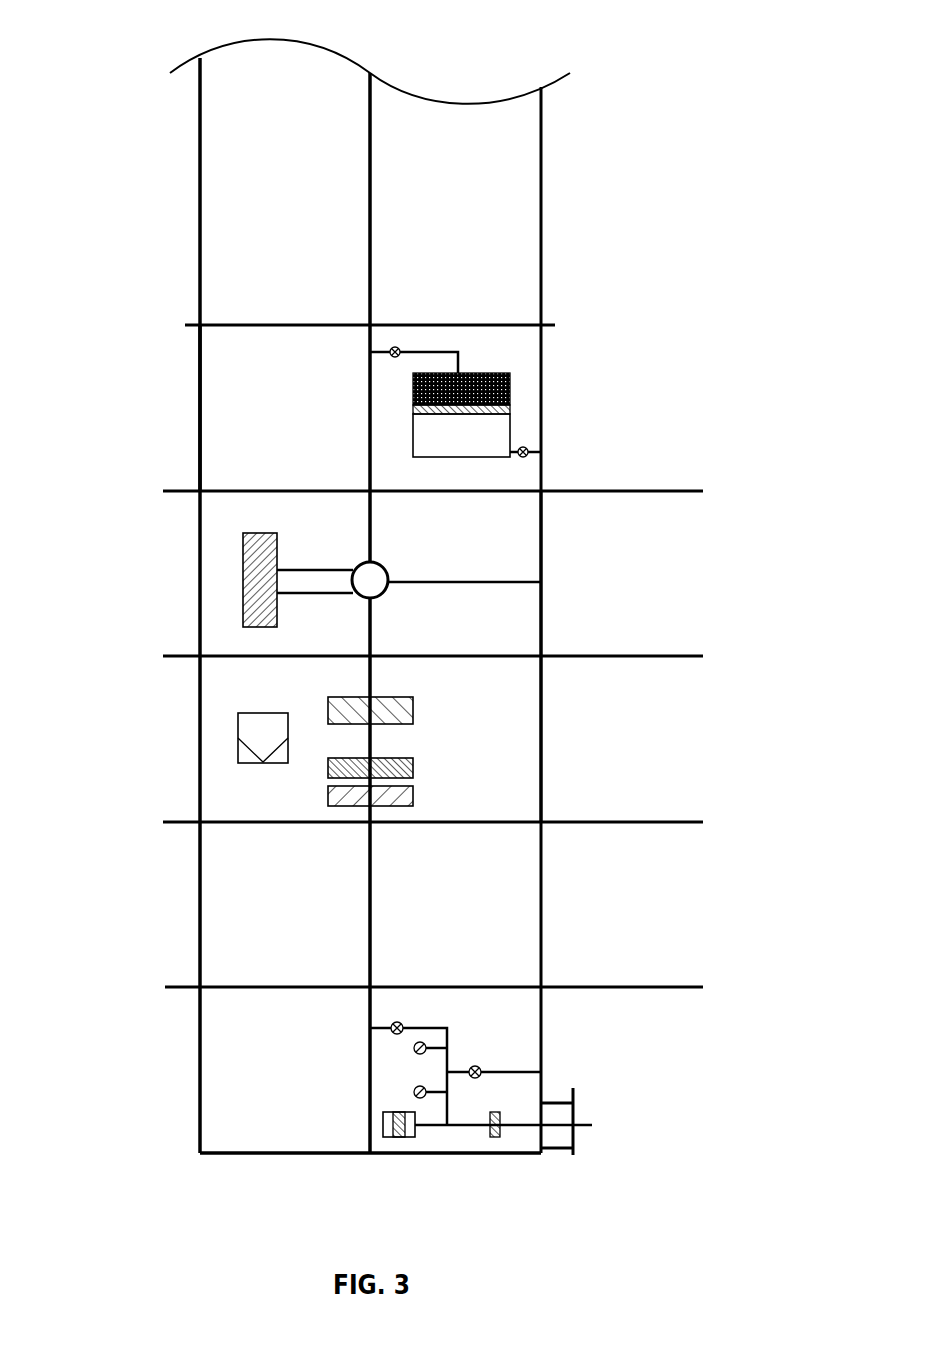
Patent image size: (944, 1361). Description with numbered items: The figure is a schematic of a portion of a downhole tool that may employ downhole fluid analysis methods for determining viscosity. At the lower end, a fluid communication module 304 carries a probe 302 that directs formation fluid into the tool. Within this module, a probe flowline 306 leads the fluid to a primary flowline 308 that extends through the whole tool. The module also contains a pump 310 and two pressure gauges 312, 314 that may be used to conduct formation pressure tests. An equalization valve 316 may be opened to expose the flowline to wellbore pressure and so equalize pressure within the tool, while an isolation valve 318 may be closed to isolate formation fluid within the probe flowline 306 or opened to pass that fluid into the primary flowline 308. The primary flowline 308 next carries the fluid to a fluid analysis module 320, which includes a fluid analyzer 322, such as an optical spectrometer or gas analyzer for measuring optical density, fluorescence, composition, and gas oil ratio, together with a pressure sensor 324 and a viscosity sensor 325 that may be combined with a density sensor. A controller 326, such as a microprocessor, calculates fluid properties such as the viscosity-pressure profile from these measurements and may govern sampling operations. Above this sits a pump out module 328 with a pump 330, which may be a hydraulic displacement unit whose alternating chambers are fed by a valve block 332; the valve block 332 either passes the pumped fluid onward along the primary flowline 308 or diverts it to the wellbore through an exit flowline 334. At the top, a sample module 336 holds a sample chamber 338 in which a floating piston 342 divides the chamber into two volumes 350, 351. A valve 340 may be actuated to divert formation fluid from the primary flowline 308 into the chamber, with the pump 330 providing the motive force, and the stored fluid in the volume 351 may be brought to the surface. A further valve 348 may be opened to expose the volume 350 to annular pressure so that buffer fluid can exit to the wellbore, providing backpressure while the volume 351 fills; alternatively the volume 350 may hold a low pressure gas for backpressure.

The probe 302 is at (113, 30).
The fluid communication module 304 is at (200, 1073).
The probe flowline 306 is at (470, 1127).
The primary flowline 308 is at (370, 905).
The pump 310 is at (398, 1137).
The pressure gauge 312 is at (413, 1092).
The pressure gauge 314 is at (413, 1049).
The equalization valve 316 is at (475, 1066).
The isolation valve 318 is at (397, 1021).
The fluid analysis module 320 is at (541, 740).
The fluid analyzer 322 is at (400, 697).
The pressure sensor 324 is at (403, 758).
The viscosity sensor 325 is at (413, 795).
The controller 326 is at (238, 728).
The pump out module 328 is at (541, 540).
The pump 330 is at (243, 583).
The valve block 332 is at (384, 569).
The exit flowline 334 is at (458, 583).
The sample module 336 is at (200, 395).
The sample chamber 338 is at (413, 443).
The valve 340 is at (395, 358).
The floating piston 342 is at (413, 410).
The valve 348 is at (527, 447).
The volume 350 is at (465, 437).
The volume 351 is at (473, 373).